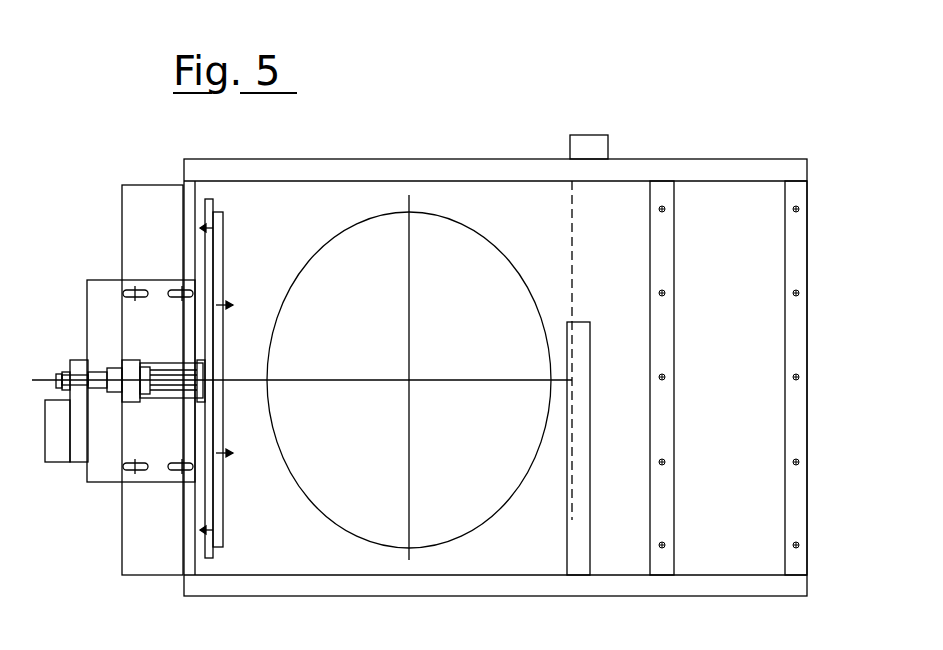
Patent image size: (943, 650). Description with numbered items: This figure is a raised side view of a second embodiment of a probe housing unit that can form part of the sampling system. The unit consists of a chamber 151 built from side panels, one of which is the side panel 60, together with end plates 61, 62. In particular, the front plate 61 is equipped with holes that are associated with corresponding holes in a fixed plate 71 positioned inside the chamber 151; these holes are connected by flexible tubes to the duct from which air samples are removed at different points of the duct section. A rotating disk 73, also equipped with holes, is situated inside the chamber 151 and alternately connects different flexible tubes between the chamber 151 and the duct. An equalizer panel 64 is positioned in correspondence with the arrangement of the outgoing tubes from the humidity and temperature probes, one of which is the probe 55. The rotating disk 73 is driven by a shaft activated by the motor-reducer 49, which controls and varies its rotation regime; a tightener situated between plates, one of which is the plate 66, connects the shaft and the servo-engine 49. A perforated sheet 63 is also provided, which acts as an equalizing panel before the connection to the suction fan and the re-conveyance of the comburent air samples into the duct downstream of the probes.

The chamber 151 is at (449, 148).
The humidity and temperature probe 55 is at (594, 143).
The side panel 60 is at (497, 555).
The front plate 61 is at (213, 511).
The end plate 62 is at (797, 333).
The perforated sheet 63 is at (663, 340).
The equalizer panel 64 is at (582, 332).
The plate 66 is at (152, 213).
The fixed plate 71 is at (220, 248).
The rotating disk 73 is at (225, 342).
The motor-reducer 49 is at (58, 448).